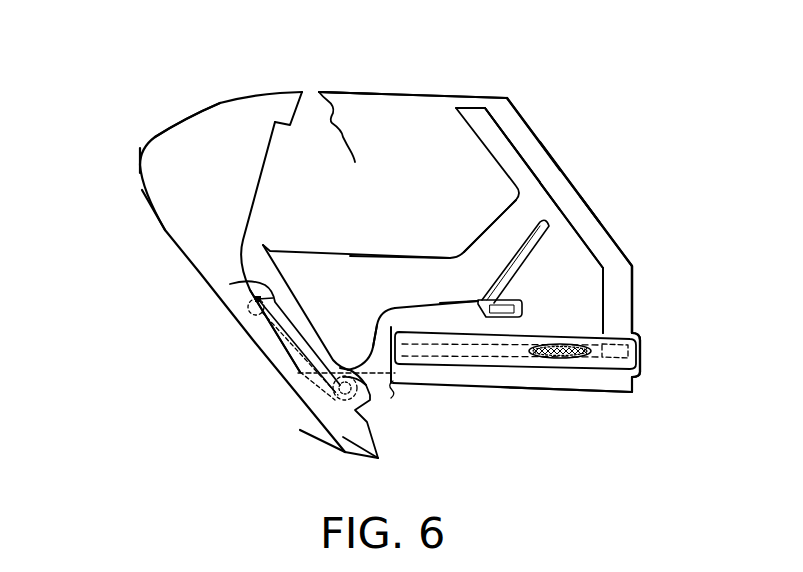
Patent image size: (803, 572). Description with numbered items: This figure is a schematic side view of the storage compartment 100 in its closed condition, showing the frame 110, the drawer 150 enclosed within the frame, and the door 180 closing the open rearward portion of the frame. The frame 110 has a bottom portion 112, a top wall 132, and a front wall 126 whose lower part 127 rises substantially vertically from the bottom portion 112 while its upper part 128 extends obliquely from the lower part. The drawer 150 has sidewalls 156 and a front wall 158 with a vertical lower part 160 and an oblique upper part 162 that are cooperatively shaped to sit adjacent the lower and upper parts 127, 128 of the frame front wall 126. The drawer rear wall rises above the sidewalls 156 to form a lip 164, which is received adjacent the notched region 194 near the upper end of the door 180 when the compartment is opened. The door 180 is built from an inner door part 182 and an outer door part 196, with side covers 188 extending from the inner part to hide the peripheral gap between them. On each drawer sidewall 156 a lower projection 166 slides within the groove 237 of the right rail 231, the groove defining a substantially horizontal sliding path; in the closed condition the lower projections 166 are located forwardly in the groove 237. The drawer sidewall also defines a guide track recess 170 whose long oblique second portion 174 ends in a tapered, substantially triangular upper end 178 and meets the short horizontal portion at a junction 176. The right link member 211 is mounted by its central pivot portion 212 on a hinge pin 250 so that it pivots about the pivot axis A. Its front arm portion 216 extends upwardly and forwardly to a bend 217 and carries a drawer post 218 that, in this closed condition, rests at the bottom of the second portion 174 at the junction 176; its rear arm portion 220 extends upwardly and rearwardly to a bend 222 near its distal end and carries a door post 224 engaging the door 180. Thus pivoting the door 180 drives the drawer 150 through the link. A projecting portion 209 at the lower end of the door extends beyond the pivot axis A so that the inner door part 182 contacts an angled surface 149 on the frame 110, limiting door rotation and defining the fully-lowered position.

The storage compartment 100 is at (93, 80).
The frame 110 is at (420, 96).
The bottom portion 112 is at (580, 393).
The front wall 126 is at (600, 223).
The lower part 127 is at (640, 282).
The upper part 128 is at (562, 173).
The top wall 132 is at (362, 92).
The angled surface 149 is at (400, 385).
The drawer 150 is at (600, 287).
The sidewalls 156 is at (390, 267).
The front wall 158 is at (497, 118).
The lower part 160 is at (607, 305).
The upper part 162 is at (521, 119).
The lip 164 is at (267, 243).
The lower projections 166 is at (550, 358).
The guide track recess 170 is at (508, 262).
The second portion 174 is at (548, 162).
The junction 176 is at (472, 302).
The upper end 178 is at (555, 207).
The door 180 is at (155, 134).
The inner door part 182 is at (222, 120).
The side covers 188 is at (167, 193).
The notched region 194 is at (283, 91).
The outer door part 196 is at (140, 173).
The projecting portion 209 is at (340, 448).
The right link member 211 is at (393, 313).
The central pivot portion 212 is at (350, 368).
The front arm portion 216 is at (427, 312).
The bend 217 is at (384, 312).
The drawer post 218 is at (527, 287).
The rear arm portion 220 is at (303, 340).
The bend 222 is at (230, 285).
The door post 224 is at (252, 306).
The right rail 231 is at (612, 342).
The groove 237 is at (620, 352).
The hinge pin 250 is at (370, 399).
The pivot axis A is at (375, 420).